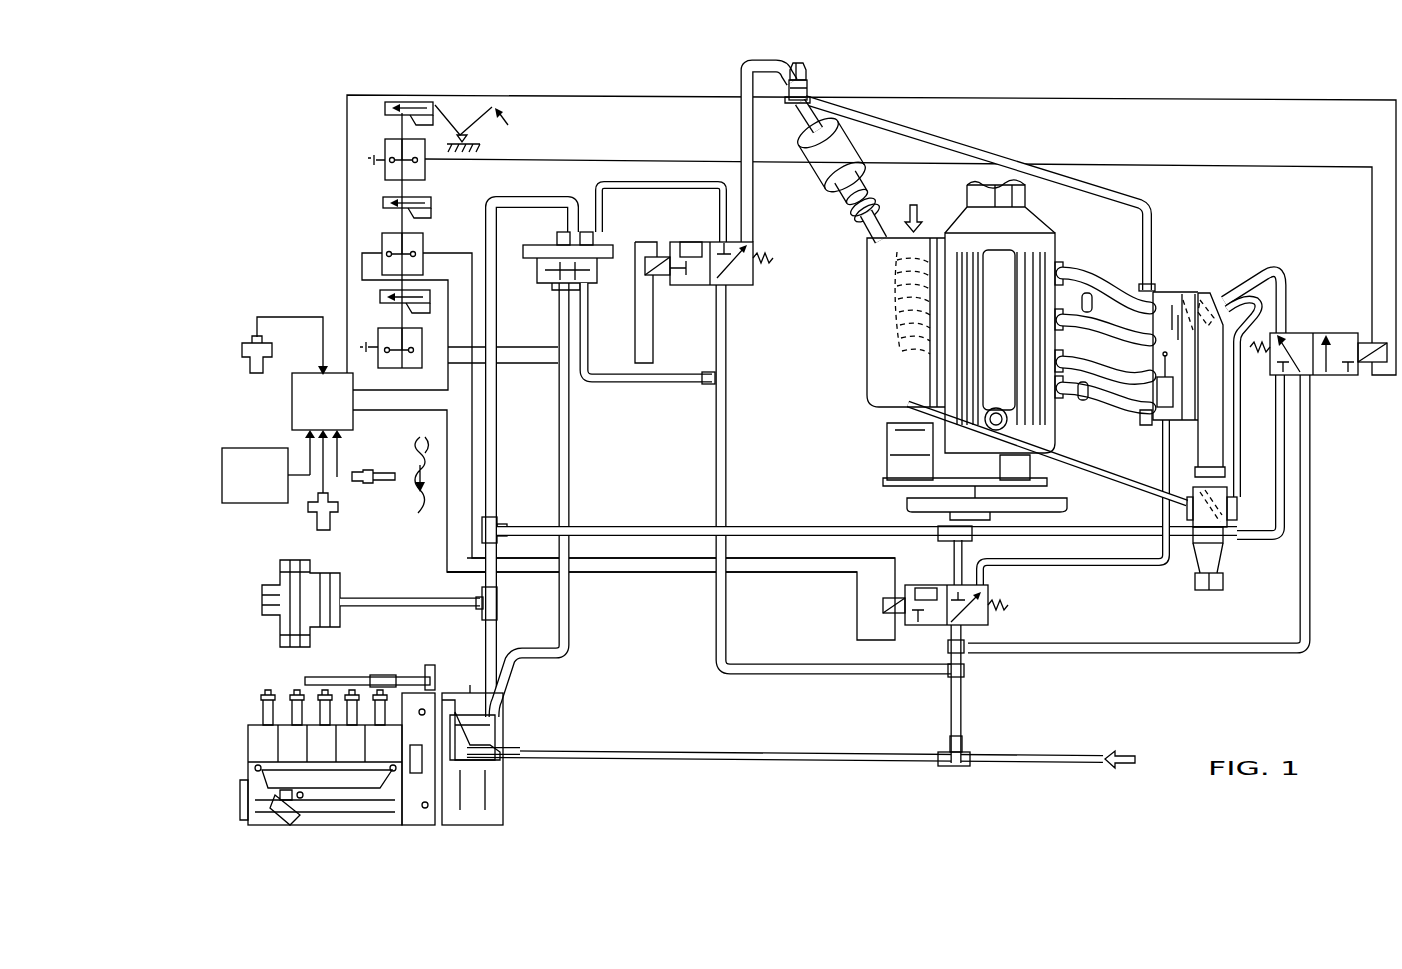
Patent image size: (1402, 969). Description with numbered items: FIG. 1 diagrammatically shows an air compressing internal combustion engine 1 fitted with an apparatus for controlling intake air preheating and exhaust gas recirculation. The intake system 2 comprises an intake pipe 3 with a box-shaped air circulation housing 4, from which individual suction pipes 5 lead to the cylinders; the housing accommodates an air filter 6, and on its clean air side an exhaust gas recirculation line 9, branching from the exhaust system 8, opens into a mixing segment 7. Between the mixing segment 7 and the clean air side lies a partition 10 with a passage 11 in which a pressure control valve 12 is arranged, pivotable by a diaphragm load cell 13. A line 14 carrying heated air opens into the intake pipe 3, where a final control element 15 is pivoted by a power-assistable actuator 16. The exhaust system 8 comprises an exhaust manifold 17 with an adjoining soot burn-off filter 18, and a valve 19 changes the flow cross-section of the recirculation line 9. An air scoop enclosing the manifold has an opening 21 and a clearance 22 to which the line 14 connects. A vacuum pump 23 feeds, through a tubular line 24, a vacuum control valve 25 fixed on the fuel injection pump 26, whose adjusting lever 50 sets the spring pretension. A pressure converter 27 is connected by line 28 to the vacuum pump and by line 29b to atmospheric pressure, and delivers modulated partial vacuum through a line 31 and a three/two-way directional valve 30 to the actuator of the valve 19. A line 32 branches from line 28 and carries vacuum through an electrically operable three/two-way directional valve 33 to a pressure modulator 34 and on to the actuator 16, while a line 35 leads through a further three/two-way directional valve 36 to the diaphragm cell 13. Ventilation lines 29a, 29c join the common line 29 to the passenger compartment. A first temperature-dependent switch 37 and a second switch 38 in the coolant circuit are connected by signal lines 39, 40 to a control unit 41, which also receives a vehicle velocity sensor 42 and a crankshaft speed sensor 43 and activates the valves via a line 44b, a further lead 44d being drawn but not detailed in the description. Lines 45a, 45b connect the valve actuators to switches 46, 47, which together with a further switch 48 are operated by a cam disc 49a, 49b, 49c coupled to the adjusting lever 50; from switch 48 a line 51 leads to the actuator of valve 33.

The internal combustion engine 1 is at (1004, 312).
The intake system 2 is at (1190, 284).
The intake pipe 3 is at (1203, 575).
The air circulation housing 4 is at (1212, 355).
The suction pipes 5 is at (1090, 295).
The air filter 6 is at (1182, 300).
The mixing segment 7 is at (1130, 352).
The exhaust system 8 is at (915, 176).
The exhaust gas recirculation line 9 is at (1130, 205).
The partition 10 is at (1173, 420).
The passage 11 is at (1170, 322).
The pressure control valve 12 is at (1170, 390).
The diaphragm load cell 13 is at (1147, 418).
The line 14 is at (1063, 482).
The final control element 15 is at (1233, 497).
The actuator 16 is at (1236, 537).
The exhaust manifold 17 is at (870, 375).
The soot burn-off filter 18 is at (821, 185).
The valve 19 is at (810, 75).
The opening 21 is at (926, 232).
The clearance 22 is at (905, 406).
The vacuum pump 23 is at (270, 630).
The tubular line 24 is at (390, 606).
The vacuum control valve 25 is at (503, 747).
The fuel injection pump 26 is at (500, 788).
The pressure converter 27 is at (606, 245).
The line 28 is at (497, 470).
The common line 29 is at (1005, 757).
The line 29a is at (1210, 650).
The line 29b is at (748, 670).
The line 29c is at (727, 365).
The 3/2-way directional valve 30 is at (705, 287).
The line 31 is at (688, 185).
The line 32 is at (627, 525).
The electrically operable 3/2-way directional valve 33 is at (1325, 375).
The pressure modulator 34 is at (1205, 298).
The line 35 is at (955, 565).
The electrically operable 3/2-way directional valve 36 is at (925, 615).
The first temperature-dependently operable switch 37 is at (257, 337).
The second switch 38 is at (335, 528).
The signal-transmitting line 39 is at (321, 314).
The signal-transmitting line 40 is at (322, 483).
The control unit 41 is at (292, 405).
The sensor for the vehicle velocity 42 is at (237, 503).
The sensor for recording the crankshaft speed 43 is at (372, 483).
The line 44b is at (530, 363).
The control lead 44d is at (435, 573).
The line 45a is at (633, 573).
The line 45b is at (613, 350).
The switch 46 is at (382, 245).
The switch 47 is at (405, 353).
The further switch 48 is at (397, 165).
The cam disc 49a is at (431, 303).
The cam disc 49b is at (434, 210).
The cam disc 49c is at (433, 124).
The adjusting lever 50 is at (434, 107).
The line 51 is at (640, 183).